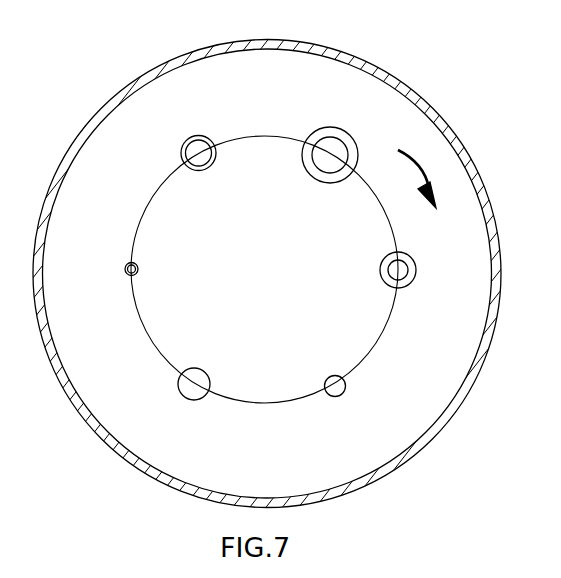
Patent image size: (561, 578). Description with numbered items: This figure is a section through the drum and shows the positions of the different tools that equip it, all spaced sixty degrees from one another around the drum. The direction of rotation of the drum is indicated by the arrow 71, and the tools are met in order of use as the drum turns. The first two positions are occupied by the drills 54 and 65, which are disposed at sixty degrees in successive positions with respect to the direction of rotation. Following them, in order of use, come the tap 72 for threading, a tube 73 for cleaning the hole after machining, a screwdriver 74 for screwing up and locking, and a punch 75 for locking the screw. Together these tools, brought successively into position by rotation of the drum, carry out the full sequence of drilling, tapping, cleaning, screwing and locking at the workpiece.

The drill 54 is at (405, 262).
The drill 65 is at (330, 147).
The arrow 71 is at (417, 156).
The tap 72 is at (207, 135).
The tube 73 is at (125, 268).
The screwdriver 74 is at (187, 386).
The punch 75 is at (346, 386).